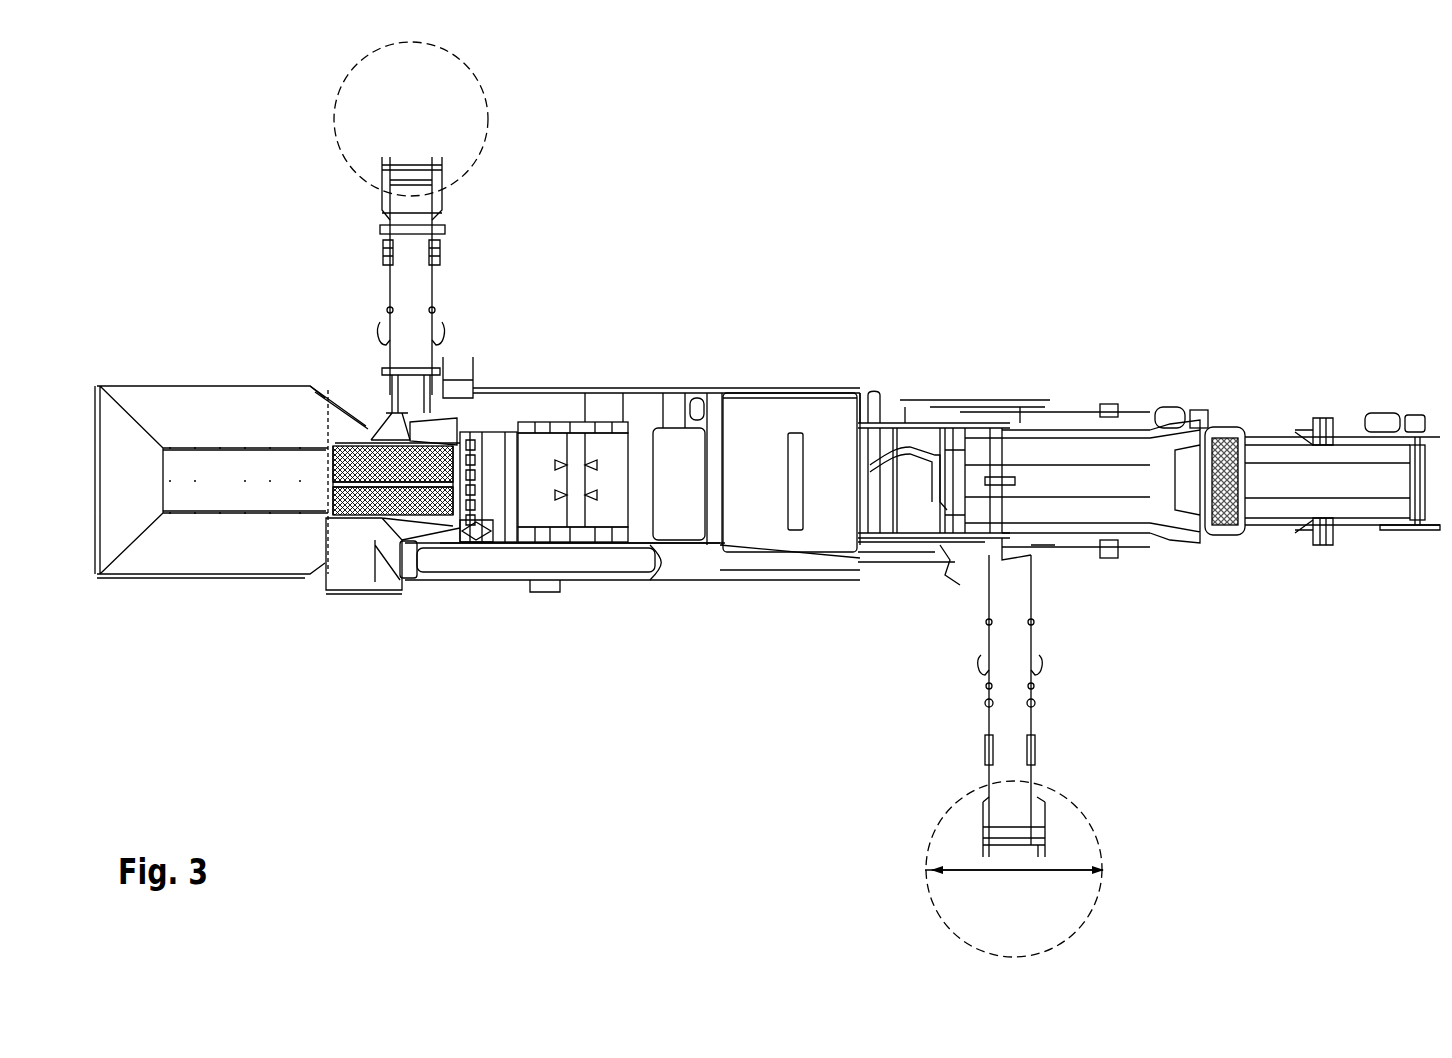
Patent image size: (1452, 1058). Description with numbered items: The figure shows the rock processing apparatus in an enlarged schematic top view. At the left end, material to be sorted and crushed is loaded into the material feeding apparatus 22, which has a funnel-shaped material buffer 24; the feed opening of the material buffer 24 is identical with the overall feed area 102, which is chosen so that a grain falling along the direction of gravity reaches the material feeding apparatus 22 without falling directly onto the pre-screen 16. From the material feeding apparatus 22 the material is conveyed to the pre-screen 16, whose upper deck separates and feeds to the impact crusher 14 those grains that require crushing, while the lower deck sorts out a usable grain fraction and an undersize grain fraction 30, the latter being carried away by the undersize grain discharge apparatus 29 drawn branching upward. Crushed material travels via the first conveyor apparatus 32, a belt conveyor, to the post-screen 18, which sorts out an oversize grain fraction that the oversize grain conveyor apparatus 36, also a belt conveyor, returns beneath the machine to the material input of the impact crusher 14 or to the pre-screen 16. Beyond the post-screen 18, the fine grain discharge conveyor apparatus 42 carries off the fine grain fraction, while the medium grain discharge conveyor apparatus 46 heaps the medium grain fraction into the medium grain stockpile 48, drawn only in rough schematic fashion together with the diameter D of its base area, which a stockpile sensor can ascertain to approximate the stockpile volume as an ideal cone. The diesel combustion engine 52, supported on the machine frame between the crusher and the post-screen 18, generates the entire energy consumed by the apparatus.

The impact crusher 14 is at (530, 478).
The pre-screen 16 is at (370, 455).
The post-screen 18 is at (1222, 458).
The material feeding apparatus 22 is at (222, 486).
The material buffer 24 is at (215, 410).
The undersize grain discharge apparatus 29 is at (420, 293).
The undersize grain fraction 30 is at (472, 96).
The first conveyor apparatus 32 is at (1070, 440).
The oversize grain conveyor apparatus 36 is at (502, 565).
The fine grain discharge conveyor apparatus 42 is at (1263, 458).
The medium grain discharge conveyor apparatus 46 is at (1012, 716).
The medium grain stockpile 48 is at (1092, 838).
The diesel combustion engine 52 is at (755, 440).
The overall feed area 102 is at (268, 580).
The diameter D is at (1011, 873).